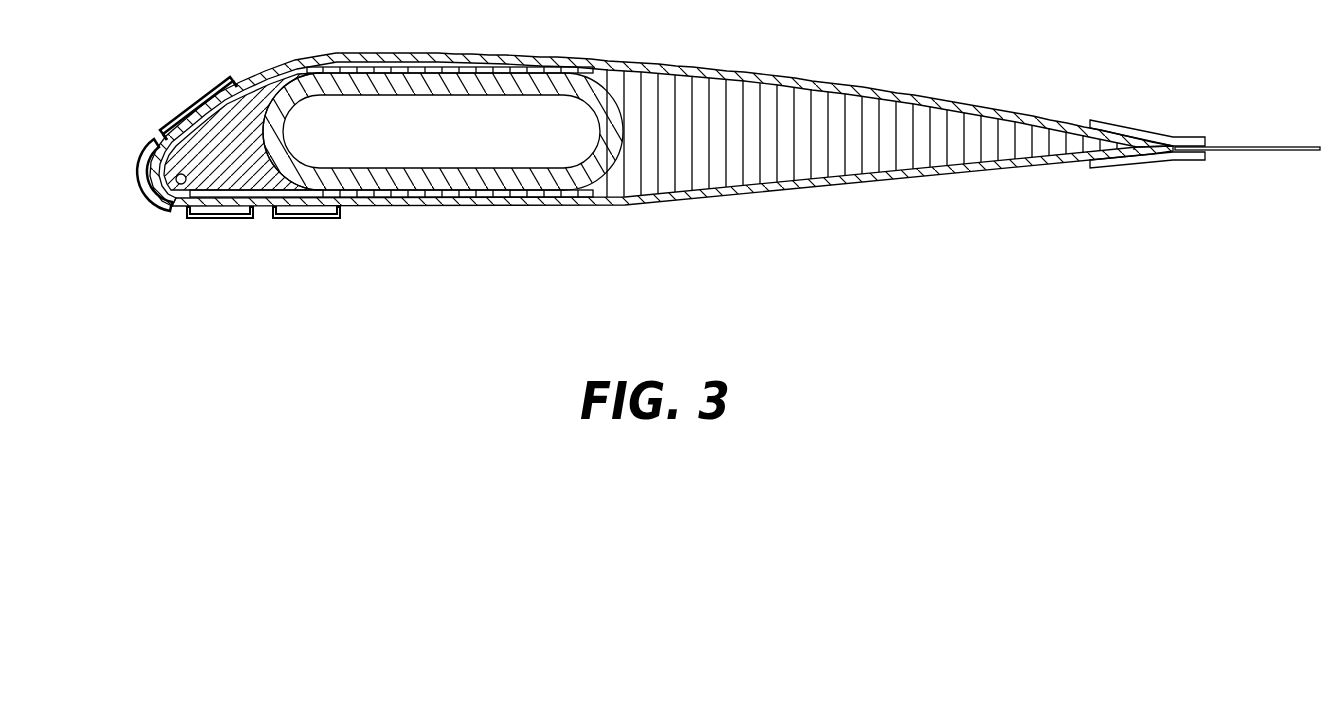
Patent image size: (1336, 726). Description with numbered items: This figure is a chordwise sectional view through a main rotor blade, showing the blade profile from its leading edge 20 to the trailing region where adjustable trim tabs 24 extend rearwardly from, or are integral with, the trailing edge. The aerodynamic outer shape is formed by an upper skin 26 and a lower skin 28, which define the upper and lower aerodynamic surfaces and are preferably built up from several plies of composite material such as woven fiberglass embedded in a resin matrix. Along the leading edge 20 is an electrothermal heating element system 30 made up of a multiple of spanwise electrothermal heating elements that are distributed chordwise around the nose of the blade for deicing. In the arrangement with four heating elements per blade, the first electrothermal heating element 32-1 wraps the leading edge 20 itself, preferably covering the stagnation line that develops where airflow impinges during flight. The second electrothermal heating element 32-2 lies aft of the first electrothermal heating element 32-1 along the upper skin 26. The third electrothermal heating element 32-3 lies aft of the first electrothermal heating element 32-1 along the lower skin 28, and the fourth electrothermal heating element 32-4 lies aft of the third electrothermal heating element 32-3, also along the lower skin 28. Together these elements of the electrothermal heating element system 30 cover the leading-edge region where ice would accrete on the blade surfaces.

The leading edge 20 is at (185, 184).
The adjustable trim tabs 24 is at (1227, 149).
The upper skin 26 is at (805, 78).
The lower skin 28 is at (774, 196).
The electrothermal heating element system 30 is at (200, 162).
The first electrothermal heating element 32-1 is at (136, 173).
The second electrothermal heating element 32-2 is at (190, 101).
The third electrothermal heating element 32-3 is at (203, 218).
The fourth electrothermal heating element 32-4 is at (288, 219).